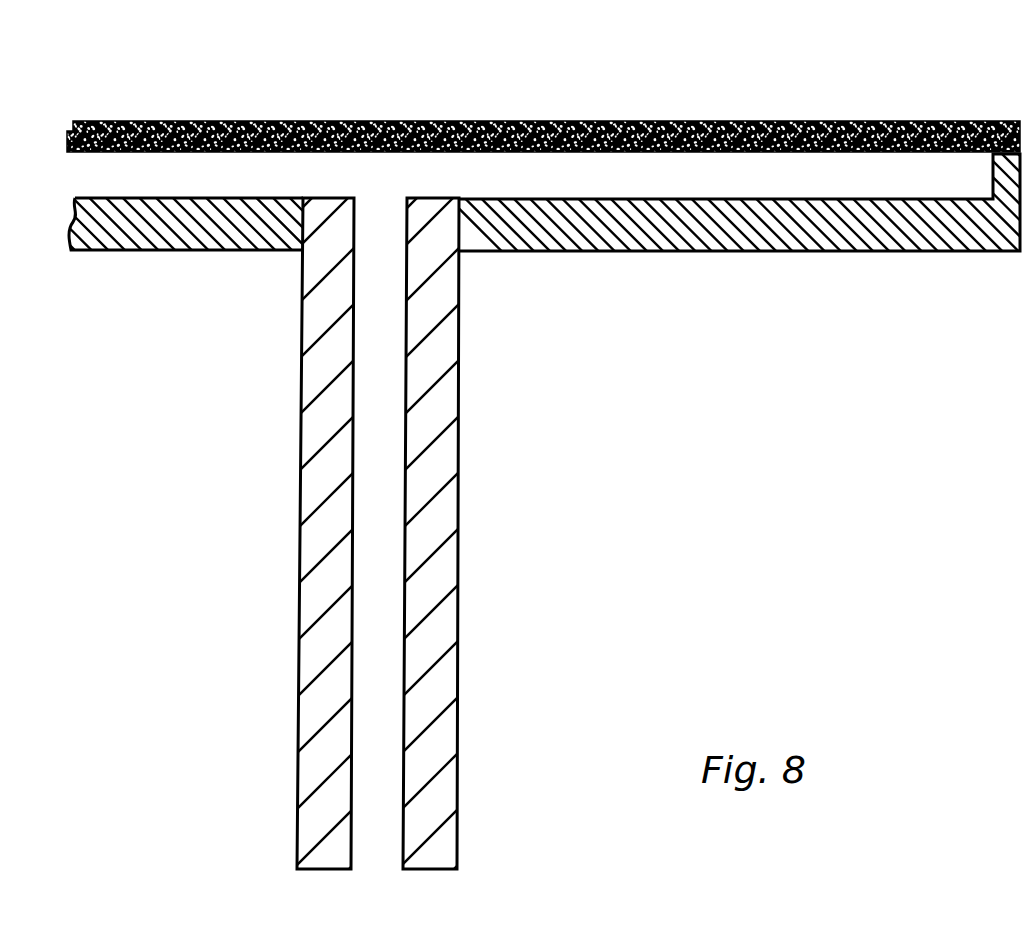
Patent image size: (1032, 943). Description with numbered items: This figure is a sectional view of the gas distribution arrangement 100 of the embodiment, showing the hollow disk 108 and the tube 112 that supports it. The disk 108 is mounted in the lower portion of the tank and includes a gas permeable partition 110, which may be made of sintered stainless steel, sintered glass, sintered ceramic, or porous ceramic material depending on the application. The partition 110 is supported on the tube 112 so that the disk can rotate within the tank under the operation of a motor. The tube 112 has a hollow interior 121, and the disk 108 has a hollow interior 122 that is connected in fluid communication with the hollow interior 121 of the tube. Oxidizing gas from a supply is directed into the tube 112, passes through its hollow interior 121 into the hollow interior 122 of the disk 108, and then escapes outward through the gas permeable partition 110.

The assembly 100 is at (220, 63).
The hollow disk 108 is at (607, 251).
The gas permeable partition 110 is at (557, 122).
The tube 112 is at (459, 352).
The hollow interior of the tube 121 is at (407, 470).
The hollow interior of the disk 122 is at (823, 200).